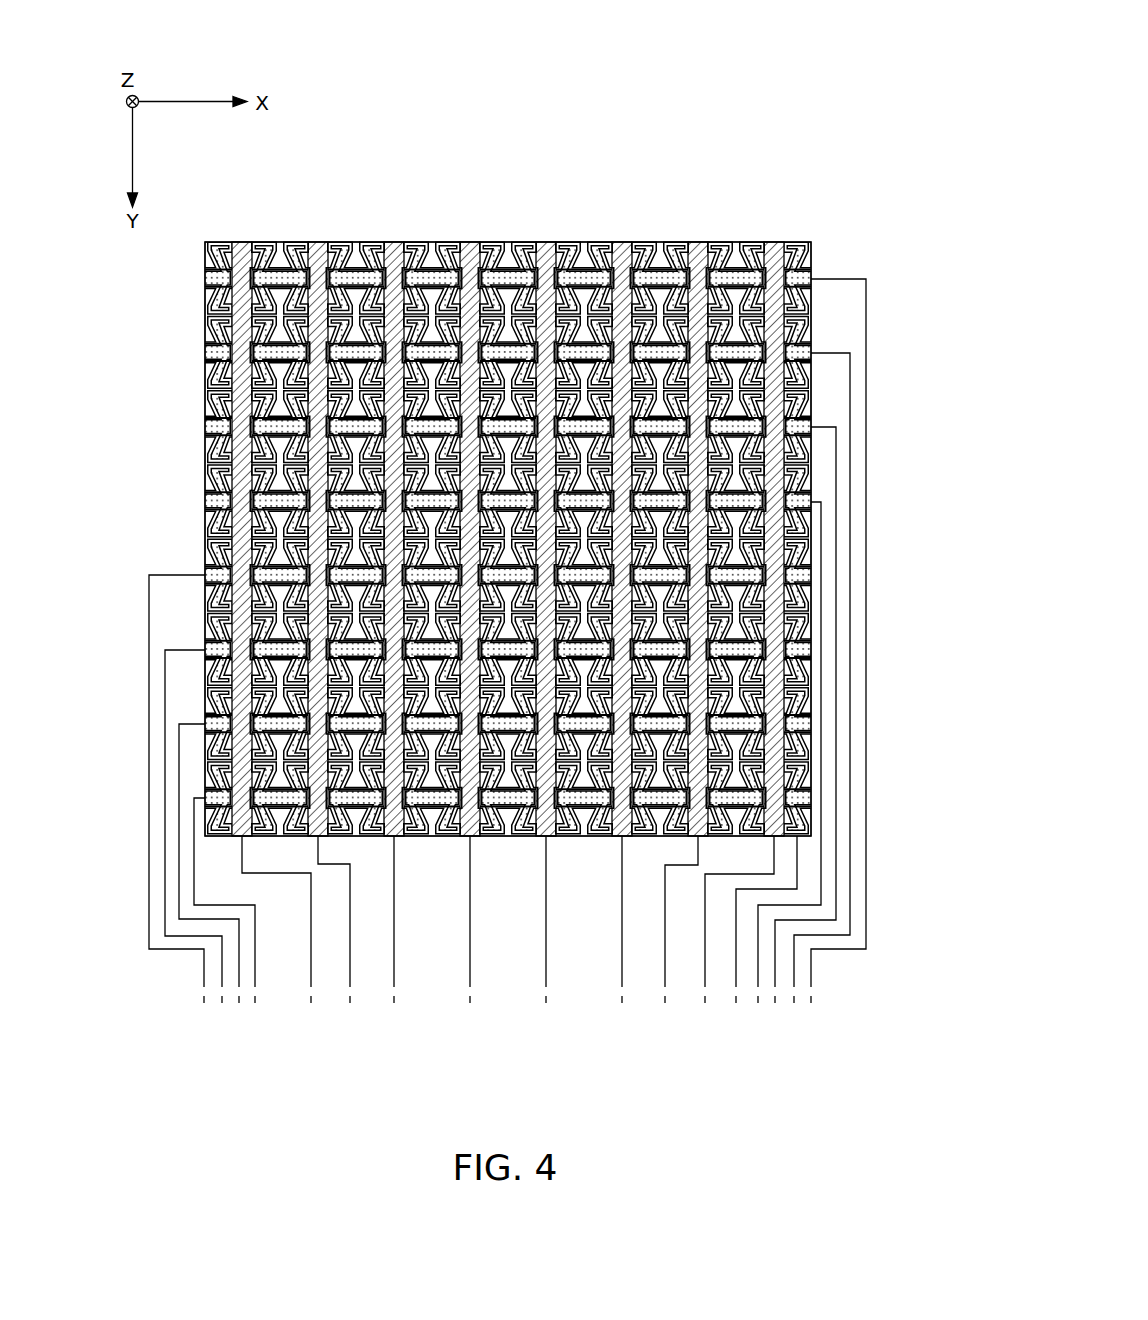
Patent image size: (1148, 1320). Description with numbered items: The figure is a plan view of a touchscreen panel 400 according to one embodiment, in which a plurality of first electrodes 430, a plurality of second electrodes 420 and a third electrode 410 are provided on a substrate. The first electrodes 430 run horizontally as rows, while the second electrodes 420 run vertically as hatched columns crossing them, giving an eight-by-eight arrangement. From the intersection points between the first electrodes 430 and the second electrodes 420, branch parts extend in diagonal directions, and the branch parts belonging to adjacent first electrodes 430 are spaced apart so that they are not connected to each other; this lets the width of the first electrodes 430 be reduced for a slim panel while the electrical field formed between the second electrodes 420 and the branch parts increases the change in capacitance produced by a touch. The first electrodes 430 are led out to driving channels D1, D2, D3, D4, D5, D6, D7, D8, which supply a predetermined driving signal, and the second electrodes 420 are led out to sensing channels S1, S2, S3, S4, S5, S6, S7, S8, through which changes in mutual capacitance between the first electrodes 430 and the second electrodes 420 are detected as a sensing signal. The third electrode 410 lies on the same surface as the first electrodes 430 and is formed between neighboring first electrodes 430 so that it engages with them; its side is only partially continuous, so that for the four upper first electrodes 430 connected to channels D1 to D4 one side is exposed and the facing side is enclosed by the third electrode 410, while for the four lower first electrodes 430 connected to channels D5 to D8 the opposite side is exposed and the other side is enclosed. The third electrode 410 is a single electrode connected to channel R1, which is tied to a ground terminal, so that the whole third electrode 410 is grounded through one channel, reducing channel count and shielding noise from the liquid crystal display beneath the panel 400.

The touchscreen panel 400 is at (752, 128).
The third electrode 410 is at (205, 242).
The second electrodes 420 is at (238, 242).
The first electrodes 430 is at (218, 282).
The channel S1 is at (311, 988).
The channel S2 is at (350, 988).
The channel S3 is at (394, 988).
The channel S4 is at (470, 988).
The channel S5 is at (546, 988).
The channel S6 is at (622, 988).
The channel S7 is at (665, 988).
The channel S8 is at (705, 988).
The channel R1 is at (736, 988).
The channel D1 is at (811, 988).
The channel D2 is at (794, 988).
The channel D3 is at (775, 988).
The channel D4 is at (758, 988).
The channel D5 is at (204, 988).
The channel D6 is at (222, 988).
The channel D7 is at (239, 988).
The channel D8 is at (255, 988).